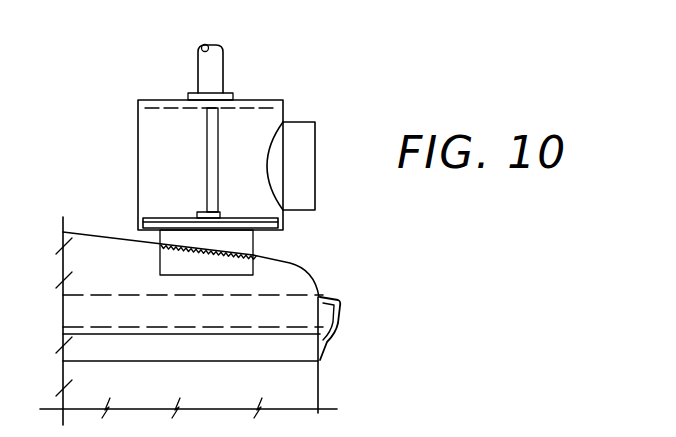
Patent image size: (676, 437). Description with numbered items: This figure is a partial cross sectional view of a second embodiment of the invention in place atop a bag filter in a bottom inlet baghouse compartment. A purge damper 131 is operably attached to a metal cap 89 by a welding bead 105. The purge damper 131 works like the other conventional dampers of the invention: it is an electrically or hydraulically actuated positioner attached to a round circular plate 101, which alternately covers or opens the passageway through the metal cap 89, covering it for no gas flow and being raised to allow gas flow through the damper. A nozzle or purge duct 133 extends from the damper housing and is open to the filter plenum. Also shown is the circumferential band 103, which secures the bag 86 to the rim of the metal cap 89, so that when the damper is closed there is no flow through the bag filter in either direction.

The purge damper 131 is at (273, 88).
The purge duct 133 is at (317, 180).
The round circular plate 101 is at (178, 218).
The metal cap 89 is at (93, 232).
The welding bead 105 is at (257, 256).
The circumferential band 103 is at (338, 312).
The bag filter 86 is at (320, 388).